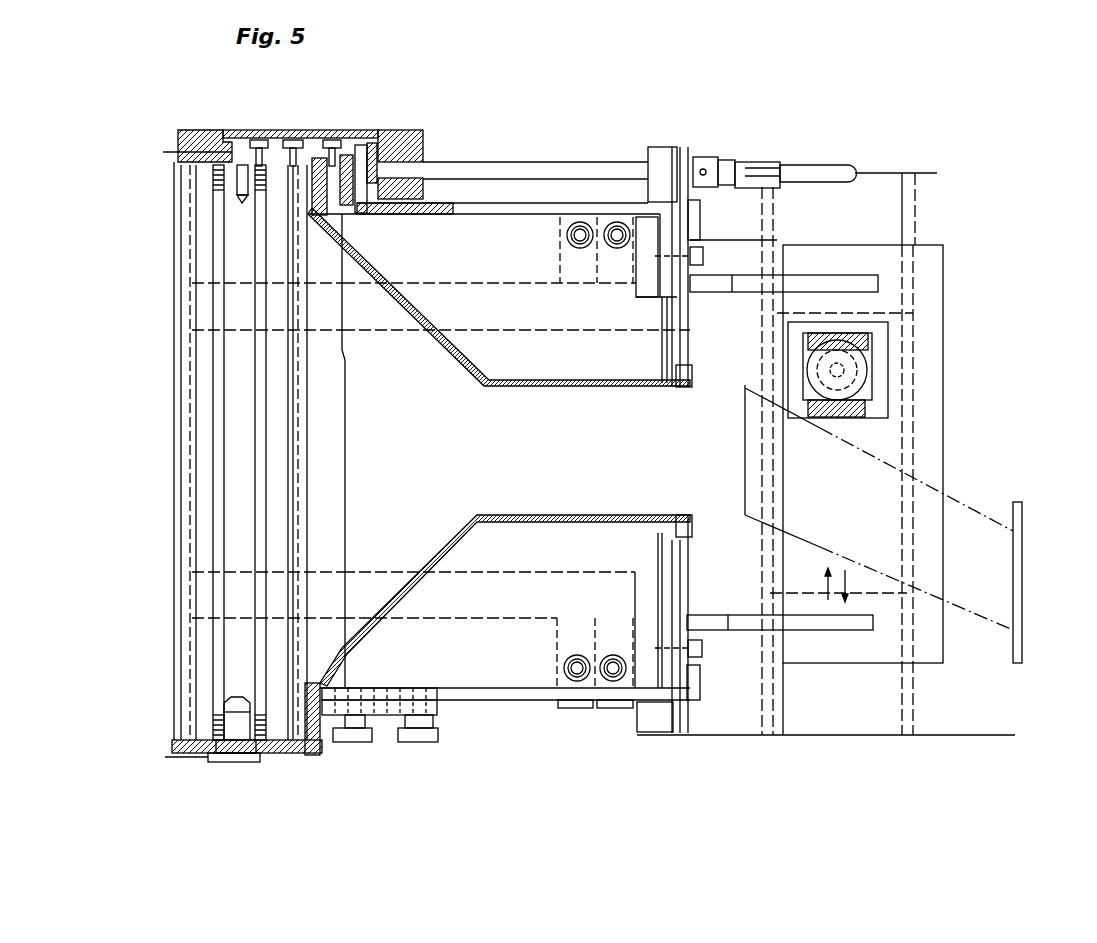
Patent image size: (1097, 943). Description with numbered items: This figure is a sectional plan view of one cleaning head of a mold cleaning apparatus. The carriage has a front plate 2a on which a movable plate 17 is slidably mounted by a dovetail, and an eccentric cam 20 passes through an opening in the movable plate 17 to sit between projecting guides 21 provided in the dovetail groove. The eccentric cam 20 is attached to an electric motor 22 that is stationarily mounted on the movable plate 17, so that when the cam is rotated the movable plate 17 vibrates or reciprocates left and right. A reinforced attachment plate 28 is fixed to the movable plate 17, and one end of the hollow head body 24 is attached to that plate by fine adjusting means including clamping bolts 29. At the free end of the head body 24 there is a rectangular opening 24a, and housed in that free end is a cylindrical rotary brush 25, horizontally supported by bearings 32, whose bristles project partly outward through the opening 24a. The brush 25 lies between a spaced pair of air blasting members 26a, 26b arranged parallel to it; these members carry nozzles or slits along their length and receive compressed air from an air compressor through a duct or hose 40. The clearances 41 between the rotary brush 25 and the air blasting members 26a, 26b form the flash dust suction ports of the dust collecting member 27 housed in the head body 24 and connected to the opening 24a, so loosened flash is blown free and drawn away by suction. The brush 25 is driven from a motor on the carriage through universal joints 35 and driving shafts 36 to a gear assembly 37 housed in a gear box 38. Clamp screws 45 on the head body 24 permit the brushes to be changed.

The front plate 2a is at (795, 723).
The movable plate 17 is at (933, 410).
The eccentric cam 20 is at (853, 375).
The projecting guides 21 is at (850, 340).
The electric motor 22 is at (873, 352).
The head body 24 is at (533, 695).
The rectangular opening 24a is at (205, 175).
The cylindrical rotary brush 25 is at (243, 457).
The air blasting member 26a is at (188, 355).
The air blasting member 26b is at (293, 476).
The dust collecting member 27 is at (534, 486).
The reinforced attachment plate 28 is at (680, 287).
The clamping bolts 29 is at (703, 257).
The bearings 32 is at (245, 160).
The universal joints 35 is at (813, 172).
The driving shafts 36 is at (602, 167).
The gear assembly 37 is at (312, 148).
The gear box 38 is at (408, 138).
The duct or hose 40 is at (507, 287).
The clearances 41 is at (280, 513).
The clamp screws 45 is at (423, 740).